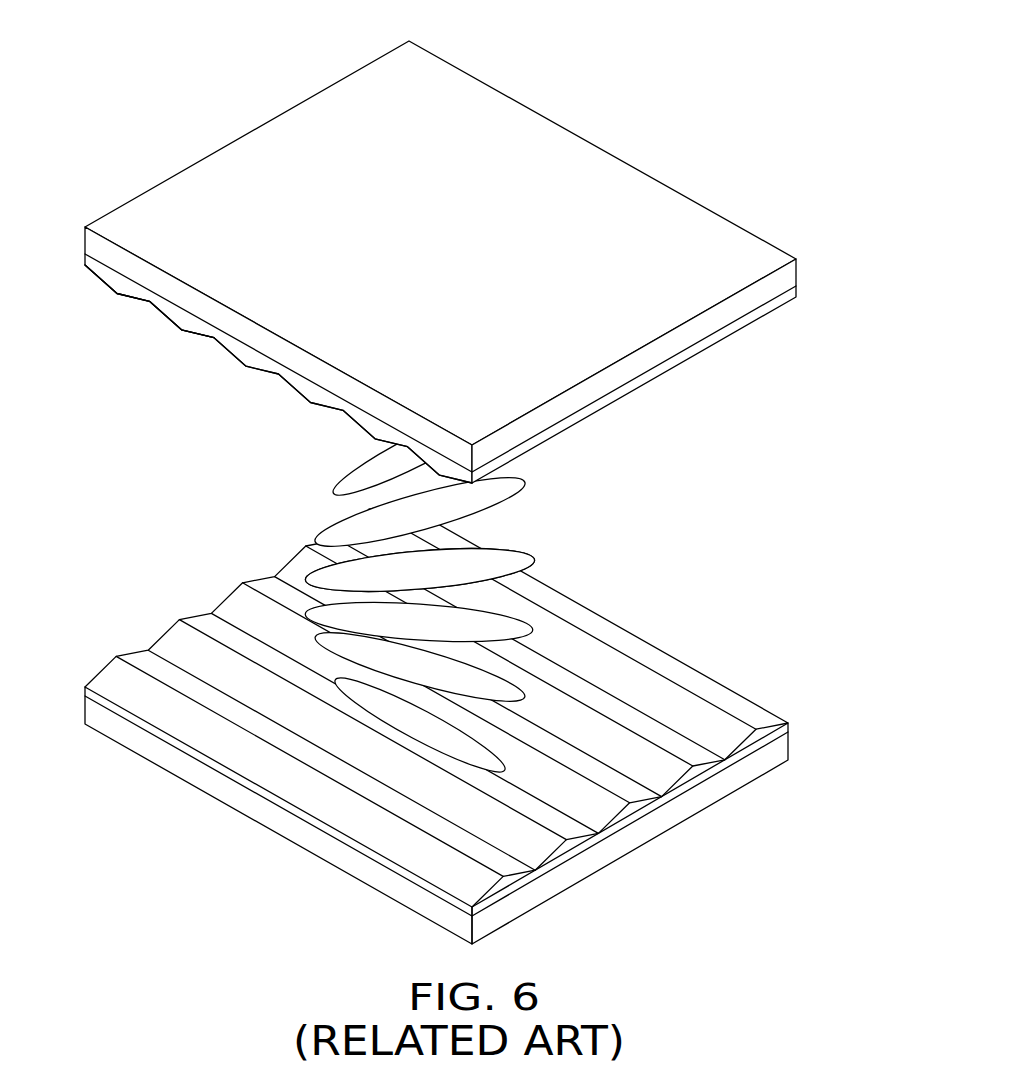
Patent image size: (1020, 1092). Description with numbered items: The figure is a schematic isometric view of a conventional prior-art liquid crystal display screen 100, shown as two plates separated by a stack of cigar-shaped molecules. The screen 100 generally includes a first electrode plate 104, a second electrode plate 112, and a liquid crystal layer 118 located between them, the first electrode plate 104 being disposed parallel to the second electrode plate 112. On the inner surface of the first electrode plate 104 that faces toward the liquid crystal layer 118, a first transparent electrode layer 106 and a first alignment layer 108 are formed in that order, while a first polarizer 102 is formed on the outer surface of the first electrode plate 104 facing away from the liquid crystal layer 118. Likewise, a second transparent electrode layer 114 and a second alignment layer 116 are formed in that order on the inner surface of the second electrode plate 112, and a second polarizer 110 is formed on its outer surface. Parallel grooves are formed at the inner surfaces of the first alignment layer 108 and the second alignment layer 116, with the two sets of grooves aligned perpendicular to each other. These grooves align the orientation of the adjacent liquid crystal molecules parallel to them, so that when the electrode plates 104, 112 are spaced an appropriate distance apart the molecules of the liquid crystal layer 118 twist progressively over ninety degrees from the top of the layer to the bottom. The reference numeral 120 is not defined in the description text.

The liquid crystal display screen 100 is at (579, 39).
The first polarizer 102 is at (407, 892).
The first electrode plate 104 is at (190, 764).
The first transparent electrode layer 106 is at (755, 743).
The first alignment layer 108 is at (600, 813).
The second polarizer 110 is at (710, 322).
The second electrode plate 112 is at (120, 285).
The second transparent electrode layer 114 is at (633, 384).
The second alignment layer 116 is at (214, 338).
The liquid crystal layer 118 is at (532, 506).
The liquid crystal molecule 120 is at (517, 566).